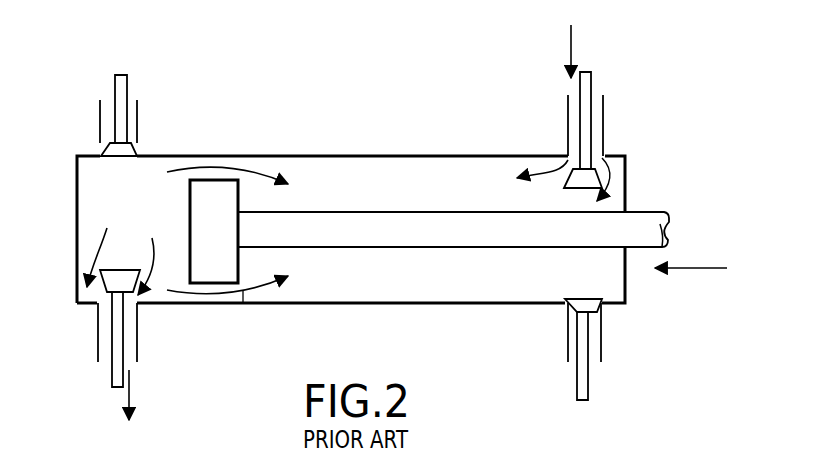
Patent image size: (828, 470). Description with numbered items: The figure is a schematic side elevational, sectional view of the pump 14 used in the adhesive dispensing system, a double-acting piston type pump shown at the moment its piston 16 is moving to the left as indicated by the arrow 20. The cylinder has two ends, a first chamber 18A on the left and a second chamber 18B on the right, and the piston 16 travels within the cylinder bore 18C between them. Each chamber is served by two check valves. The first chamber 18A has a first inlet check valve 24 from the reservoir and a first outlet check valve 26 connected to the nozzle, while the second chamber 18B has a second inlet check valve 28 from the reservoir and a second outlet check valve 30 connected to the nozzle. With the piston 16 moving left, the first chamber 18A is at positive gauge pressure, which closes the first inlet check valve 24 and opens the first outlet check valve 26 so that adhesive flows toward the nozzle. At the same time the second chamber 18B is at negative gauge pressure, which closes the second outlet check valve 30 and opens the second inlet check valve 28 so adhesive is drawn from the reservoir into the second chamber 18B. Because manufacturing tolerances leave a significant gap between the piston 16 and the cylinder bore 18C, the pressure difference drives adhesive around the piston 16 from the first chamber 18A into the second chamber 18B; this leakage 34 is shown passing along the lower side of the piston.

The pump 14 is at (77, 224).
The piston 16 is at (225, 220).
The first chamber 18A is at (150, 221).
The second chamber 18B is at (408, 289).
The cylinder bore 18C is at (413, 156).
The arrow 20 is at (694, 268).
The first inlet check valve 24 is at (108, 148).
The first outlet check valve 26 is at (113, 322).
The second inlet check valve 28 is at (583, 147).
The second outlet check valve 30 is at (580, 305).
The leakage 34 is at (243, 292).